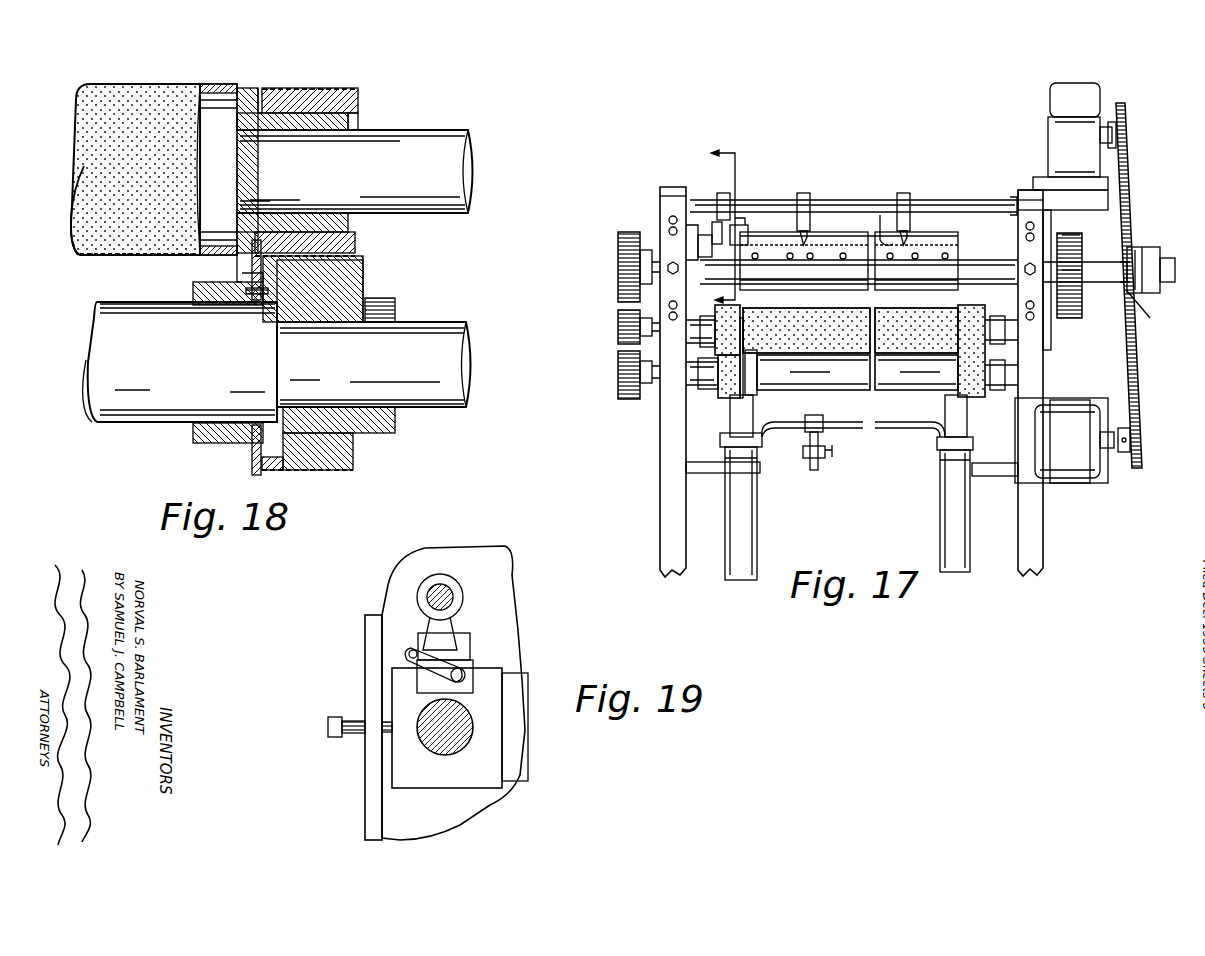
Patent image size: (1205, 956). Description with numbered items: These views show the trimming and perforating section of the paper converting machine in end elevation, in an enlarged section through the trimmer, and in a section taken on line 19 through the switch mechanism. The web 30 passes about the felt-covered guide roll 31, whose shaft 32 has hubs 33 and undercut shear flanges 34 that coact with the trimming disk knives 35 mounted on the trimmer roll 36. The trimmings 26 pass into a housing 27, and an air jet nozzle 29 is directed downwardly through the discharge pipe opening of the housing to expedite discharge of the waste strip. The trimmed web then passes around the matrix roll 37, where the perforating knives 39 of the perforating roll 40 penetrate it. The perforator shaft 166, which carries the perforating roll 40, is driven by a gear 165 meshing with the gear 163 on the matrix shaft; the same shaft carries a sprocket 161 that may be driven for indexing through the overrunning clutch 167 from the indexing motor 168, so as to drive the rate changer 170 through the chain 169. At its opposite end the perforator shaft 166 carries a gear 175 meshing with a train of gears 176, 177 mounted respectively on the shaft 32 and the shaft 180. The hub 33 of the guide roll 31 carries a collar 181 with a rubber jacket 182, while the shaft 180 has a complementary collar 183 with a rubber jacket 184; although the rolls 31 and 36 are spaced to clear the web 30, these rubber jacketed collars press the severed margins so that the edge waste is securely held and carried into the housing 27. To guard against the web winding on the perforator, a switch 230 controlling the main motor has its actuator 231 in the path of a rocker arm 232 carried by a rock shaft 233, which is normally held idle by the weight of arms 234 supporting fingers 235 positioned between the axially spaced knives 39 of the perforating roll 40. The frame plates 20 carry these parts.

In FIG. 17, the section line 19— 19 is at (709, 226).
In FIG. 17, the frame side plate 20 is at (665, 482).
In FIG. 19, the frame side plate 20 is at (505, 580).
In FIG. 18, the trimmings 26 is at (355, 245).
In FIG. 17, the housing 27 is at (745, 420).
In FIG. 17, the air jet nozzle 29 is at (758, 427).
In FIG. 18, the web 30 is at (134, 258).
In FIG. 18, the felt-covered guide roll 31 is at (210, 100).
In FIG. 17, the felt-covered guide roll 31 is at (822, 340).
In FIG. 18, the shaft 32 is at (407, 155).
In FIG. 17, the shaft 32 is at (705, 338).
In FIG. 18, the hub 33 is at (350, 120).
In FIG. 18, the undercut shear flanges 34 is at (250, 90).
In FIG. 18, the trimming disk knives 35 is at (250, 263).
In FIG. 18, the trimmer roll 36 is at (180, 395).
In FIG. 17, the trimmer roll 36 is at (850, 372).
In FIG. 17, the matrix roll 37 is at (950, 244).
In FIG. 17, the perforating knives 39 is at (928, 250).
In FIG. 17, the perforating roll 40 is at (822, 261).
In FIG. 17, the sprocket 161 is at (1148, 290).
In FIG. 17, the gear 163 is at (1068, 236).
In FIG. 17, the gear 165 is at (1072, 258).
In FIG. 17, the perforator shaft 166 is at (960, 270).
In FIG. 19, the perforator shaft 166 is at (460, 730).
In FIG. 17, the overrunning clutch 167 is at (1150, 262).
In FIG. 17, the indexing motor 168 is at (1075, 470).
In FIG. 17, the chain 169 is at (1125, 172).
In FIG. 17, the rate changer 170 is at (1088, 102).
In FIG. 17, the gear 175 is at (616, 264).
In FIG. 17, the gear 176 is at (616, 327).
In FIG. 17, the gear 177 is at (616, 372).
In FIG. 18, the shaft 180 is at (432, 342).
In FIG. 17, the shaft 180 is at (700, 368).
In FIG. 18, the collar 181 is at (312, 92).
In FIG. 18, the rubber jacket 182 is at (352, 88).
In FIG. 18, the complementary collar 183 is at (340, 455).
In FIG. 18, the rubber jacket 184 is at (340, 473).
In FIG. 17, the switch 230 is at (700, 240).
In FIG. 19, the switch 230 is at (418, 678).
In FIG. 17, the actuator 231 is at (709, 229).
In FIG. 19, the actuator 231 is at (420, 660).
In FIG. 17, the rocker arm 232 is at (732, 220).
In FIG. 19, the rocker arm 232 is at (432, 637).
In FIG. 17, the rock shaft 233 is at (770, 190).
In FIG. 19, the rock shaft 233 is at (430, 603).
In FIG. 17, the arms 234 is at (808, 222).
In FIG. 17, the fingers 235 is at (880, 218).